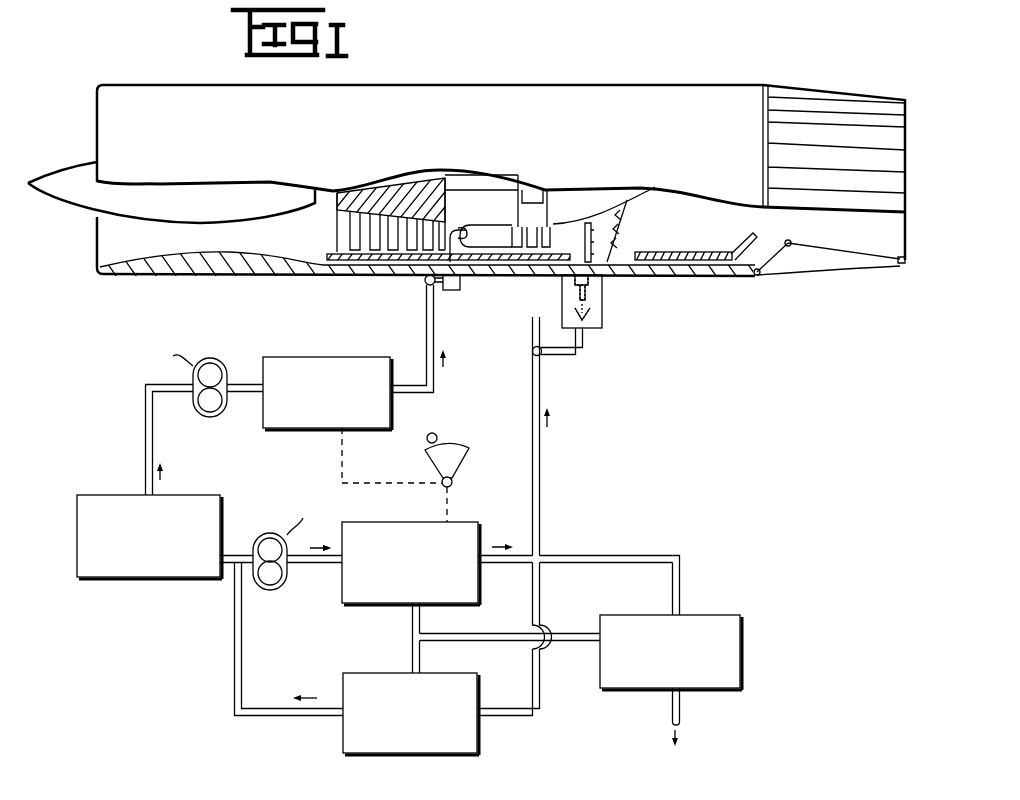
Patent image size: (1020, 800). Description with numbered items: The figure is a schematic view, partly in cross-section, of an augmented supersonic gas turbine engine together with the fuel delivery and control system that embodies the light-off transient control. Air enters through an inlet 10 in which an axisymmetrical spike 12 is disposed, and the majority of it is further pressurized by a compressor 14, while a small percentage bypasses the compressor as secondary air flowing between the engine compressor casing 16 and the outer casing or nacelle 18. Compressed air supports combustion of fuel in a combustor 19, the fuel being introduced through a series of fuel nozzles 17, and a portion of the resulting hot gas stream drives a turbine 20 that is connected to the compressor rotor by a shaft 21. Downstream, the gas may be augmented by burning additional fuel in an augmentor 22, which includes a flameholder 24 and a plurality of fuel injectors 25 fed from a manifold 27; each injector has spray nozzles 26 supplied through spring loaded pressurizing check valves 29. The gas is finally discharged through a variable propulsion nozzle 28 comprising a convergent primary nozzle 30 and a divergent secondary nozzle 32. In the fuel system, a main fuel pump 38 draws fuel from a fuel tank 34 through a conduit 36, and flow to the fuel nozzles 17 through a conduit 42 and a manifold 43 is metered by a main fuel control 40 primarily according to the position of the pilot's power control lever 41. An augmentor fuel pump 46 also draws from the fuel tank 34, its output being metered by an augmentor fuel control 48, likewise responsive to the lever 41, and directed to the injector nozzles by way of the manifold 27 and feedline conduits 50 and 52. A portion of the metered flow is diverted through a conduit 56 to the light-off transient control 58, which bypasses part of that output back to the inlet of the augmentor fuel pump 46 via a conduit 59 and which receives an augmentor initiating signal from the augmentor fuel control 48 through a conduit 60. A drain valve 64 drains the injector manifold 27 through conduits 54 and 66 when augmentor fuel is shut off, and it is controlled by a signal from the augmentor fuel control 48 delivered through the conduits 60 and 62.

The inlet 10 is at (82, 240).
The axisymmetrical spike 12 is at (127, 222).
The compressor 14 is at (336, 232).
The engine compressor casing 16 is at (385, 264).
The fuel nozzles 17 is at (462, 230).
The outer casing or nacelle 18 is at (227, 279).
The combustor 19 is at (497, 206).
The turbine 20 is at (558, 216).
The shaft 21 is at (493, 177).
The augmentor 22 is at (643, 236).
The flameholder 24 is at (606, 266).
The fuel injectors 25 is at (609, 332).
The spray nozzles 26 is at (586, 259).
The manifold 27 is at (533, 352).
The variable propulsion nozzle 28 is at (834, 86).
The spring loaded pressurizing check valves 29 is at (589, 316).
The convergent primary nozzle 30 is at (773, 258).
The divergent secondary nozzle 32 is at (847, 253).
The fuel tank 34 is at (77, 537).
The conduit 36 is at (145, 450).
The main fuel pump 38 is at (212, 418).
The main fuel control 40 is at (333, 357).
The pilot's power control lever 41 is at (465, 470).
The conduit 42 is at (435, 386).
The manifold 43 is at (427, 287).
The augmentor fuel pump 46 is at (263, 590).
The augmentor fuel control 48 is at (342, 594).
The feedline conduit 50 is at (490, 567).
The feedline conduit 52 is at (543, 470).
The conduit 54 is at (684, 592).
The conduit 56 is at (542, 705).
The light-off transient control 58 is at (376, 665).
The conduit 59 is at (245, 660).
The conduit 60 is at (422, 620).
The conduit 62 is at (453, 645).
The drain valve 64 is at (742, 638).
The conduit 66 is at (670, 708).